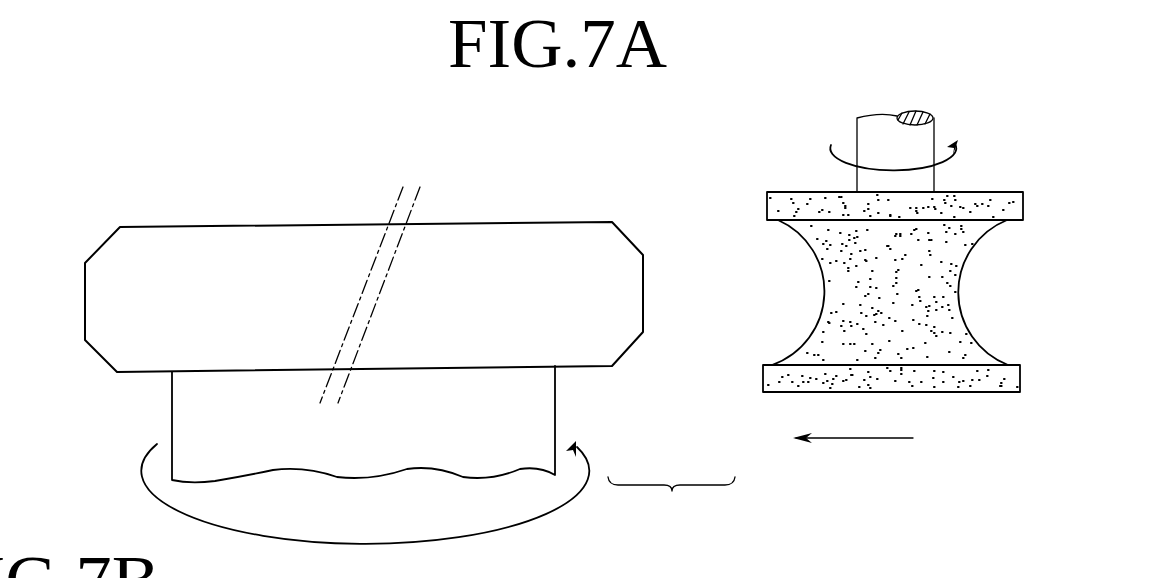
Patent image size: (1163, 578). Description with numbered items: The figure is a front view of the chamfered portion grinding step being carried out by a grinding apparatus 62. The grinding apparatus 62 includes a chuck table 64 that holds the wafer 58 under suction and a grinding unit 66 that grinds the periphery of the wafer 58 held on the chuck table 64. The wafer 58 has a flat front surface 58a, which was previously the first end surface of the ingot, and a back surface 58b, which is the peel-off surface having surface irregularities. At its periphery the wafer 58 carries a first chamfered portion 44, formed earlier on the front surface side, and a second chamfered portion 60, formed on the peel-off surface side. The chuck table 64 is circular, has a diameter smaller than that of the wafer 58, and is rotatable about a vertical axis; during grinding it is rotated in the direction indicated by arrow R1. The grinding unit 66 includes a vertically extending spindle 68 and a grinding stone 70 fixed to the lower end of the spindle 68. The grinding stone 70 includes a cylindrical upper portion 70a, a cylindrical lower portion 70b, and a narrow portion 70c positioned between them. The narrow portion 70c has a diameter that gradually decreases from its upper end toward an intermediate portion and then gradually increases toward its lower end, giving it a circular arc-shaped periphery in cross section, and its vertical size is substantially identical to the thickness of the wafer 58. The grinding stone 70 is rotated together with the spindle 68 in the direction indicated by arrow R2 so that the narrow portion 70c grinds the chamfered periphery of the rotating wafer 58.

The first chamfered portion 44 is at (100, 362).
The wafer 58 is at (507, 221).
The front surface 58a is at (153, 377).
The back surface 58b is at (231, 226).
The second chamfered portion 60 is at (102, 246).
The grinding apparatus 62 is at (671, 499).
The chuck table 64 is at (540, 409).
The grinding unit 66 is at (749, 388).
The spindle 68 is at (927, 130).
The grinding stone 70 is at (949, 292).
The upper portion 70a is at (1023, 203).
The lower portion 70b is at (1012, 374).
The narrow portion 70c is at (930, 287).
The arrow R1 is at (455, 540).
The arrow R2 is at (940, 168).